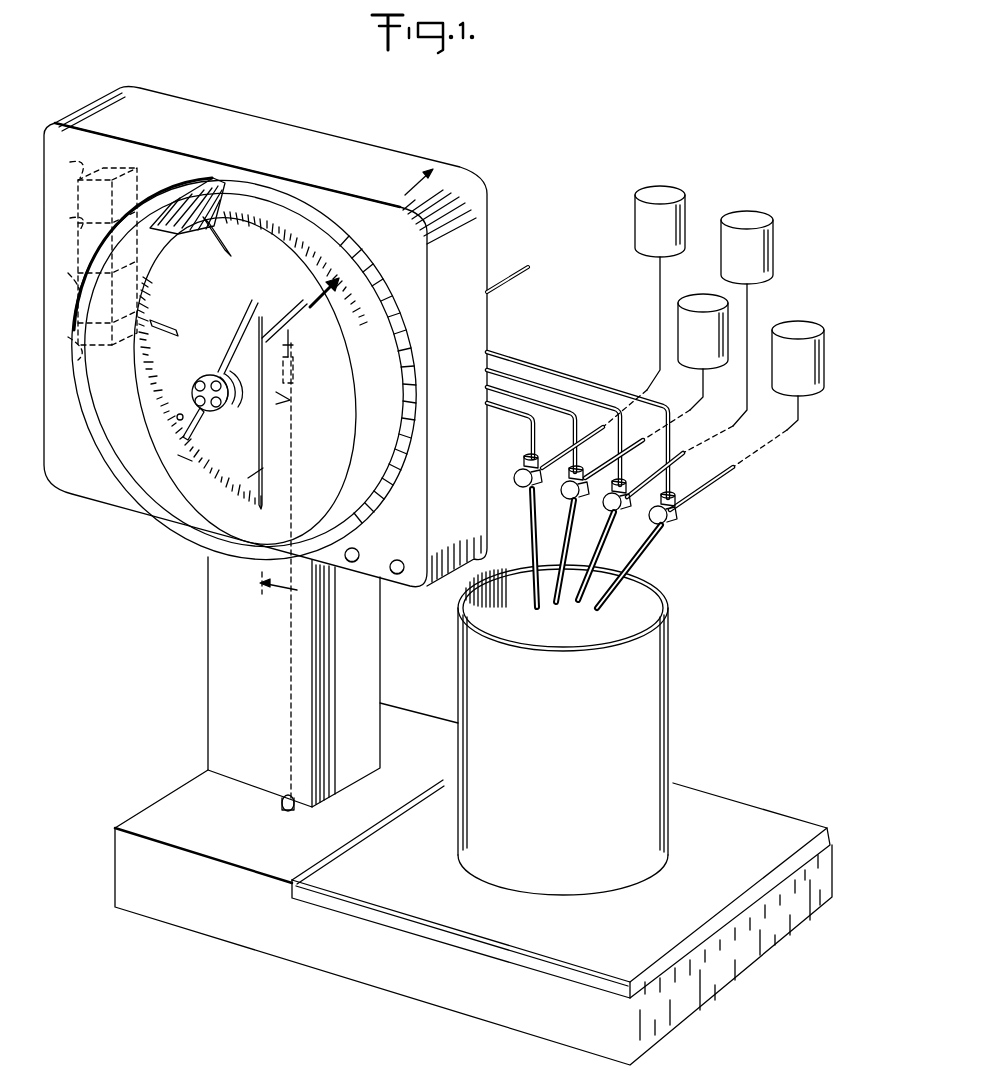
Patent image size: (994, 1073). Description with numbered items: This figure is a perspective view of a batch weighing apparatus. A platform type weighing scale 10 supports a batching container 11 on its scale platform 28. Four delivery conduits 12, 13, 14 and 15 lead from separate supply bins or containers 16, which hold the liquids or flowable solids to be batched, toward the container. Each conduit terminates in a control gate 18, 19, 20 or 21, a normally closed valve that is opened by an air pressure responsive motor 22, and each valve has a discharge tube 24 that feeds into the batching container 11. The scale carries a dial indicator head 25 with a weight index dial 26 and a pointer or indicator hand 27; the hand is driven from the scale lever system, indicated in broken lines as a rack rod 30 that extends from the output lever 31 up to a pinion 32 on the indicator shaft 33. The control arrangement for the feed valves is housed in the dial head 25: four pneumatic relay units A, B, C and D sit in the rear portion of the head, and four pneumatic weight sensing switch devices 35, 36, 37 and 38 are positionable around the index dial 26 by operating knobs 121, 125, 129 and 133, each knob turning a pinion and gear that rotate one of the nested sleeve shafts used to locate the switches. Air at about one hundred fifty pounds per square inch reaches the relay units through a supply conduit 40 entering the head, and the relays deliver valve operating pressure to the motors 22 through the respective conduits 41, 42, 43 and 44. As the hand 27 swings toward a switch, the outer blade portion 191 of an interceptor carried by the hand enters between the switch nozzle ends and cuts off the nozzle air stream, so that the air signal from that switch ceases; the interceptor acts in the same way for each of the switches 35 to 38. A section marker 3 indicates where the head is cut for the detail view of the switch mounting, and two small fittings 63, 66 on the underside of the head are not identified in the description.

The section line 3- 3 is at (335, 376).
The platform type weighing scale 10 is at (342, 963).
The batching container 11 is at (573, 757).
The delivery conduit 12 is at (555, 455).
The delivery conduit 13 is at (630, 447).
The delivery conduit 14 is at (675, 456).
The delivery conduit 15 is at (720, 470).
The supply bin 16 is at (722, 220).
The control gate 18 is at (521, 487).
The control gate 19 is at (566, 500).
The control gate 20 is at (609, 508).
The control gate 21 is at (650, 521).
The air pressure responsive motor 22 is at (527, 457).
The discharge tube 24 is at (582, 602).
The dial indicator head 25 is at (150, 103).
The weight index dial 26 is at (307, 220).
The indicator hand 27 is at (267, 443).
The scale platform 28 is at (722, 810).
The rack rod 30 is at (290, 652).
The output lever 31 is at (340, 812).
The pinion 32 is at (283, 350).
The indicator shaft 33 is at (283, 405).
The pneumatic weight sensing switch 35 is at (182, 458).
The pneumatic weight sensing switch 36 is at (173, 320).
The pneumatic weight sensing switch 37 is at (227, 228).
The pneumatic weight sensing switch 38 is at (317, 293).
The supply conduit 40 is at (512, 268).
The conduit 41 is at (492, 415).
The conduit 42 is at (512, 395).
The conduit 43 is at (557, 392).
The conduit 44 is at (550, 370).
The knob 63 is at (397, 578).
The knob 66 is at (352, 565).
The operating knob 121 is at (209, 413).
The operating knob 125 is at (178, 418).
The operating knob 129 is at (220, 368).
The operating knob 133 is at (194, 385).
The outer blade portion 191 is at (257, 480).